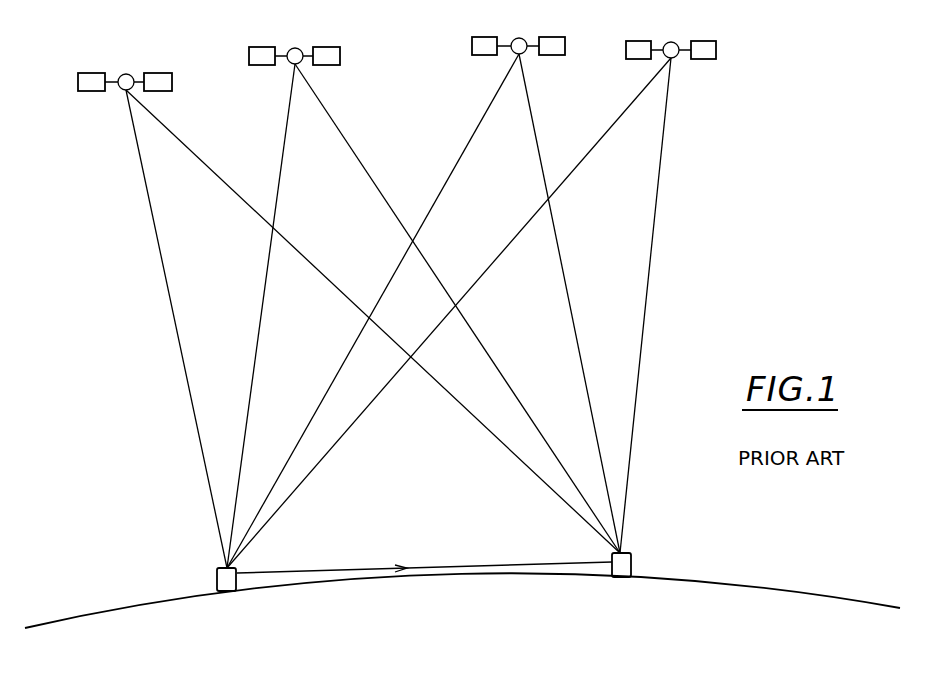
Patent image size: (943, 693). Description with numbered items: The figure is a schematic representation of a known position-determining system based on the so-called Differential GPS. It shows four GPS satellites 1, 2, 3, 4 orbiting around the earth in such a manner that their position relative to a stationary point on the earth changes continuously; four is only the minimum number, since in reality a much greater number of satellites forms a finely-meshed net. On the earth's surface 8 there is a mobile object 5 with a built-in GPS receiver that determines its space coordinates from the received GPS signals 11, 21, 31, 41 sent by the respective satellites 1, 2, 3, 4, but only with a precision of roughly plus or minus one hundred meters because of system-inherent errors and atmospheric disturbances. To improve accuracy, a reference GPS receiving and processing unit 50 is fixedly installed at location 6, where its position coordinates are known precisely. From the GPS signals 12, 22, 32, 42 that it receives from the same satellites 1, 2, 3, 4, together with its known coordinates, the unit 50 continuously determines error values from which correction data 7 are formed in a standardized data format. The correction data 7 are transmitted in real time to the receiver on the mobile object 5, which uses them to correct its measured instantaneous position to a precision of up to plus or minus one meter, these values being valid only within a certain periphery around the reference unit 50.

The GPS satellite 1 is at (118, 93).
The GPS satellite 2 is at (287, 64).
The GPS satellite 3 is at (511, 55).
The GPS satellite 4 is at (682, 60).
The GPS signal 11 is at (228, 188).
The GPS signal 12 is at (167, 275).
The GPS signal 21 is at (339, 122).
The GPS signal 22 is at (280, 184).
The GPS signal 31 is at (537, 143).
The GPS signal 32 is at (443, 188).
The GPS signal 41 is at (663, 152).
The GPS signal 42 is at (568, 178).
The mobile object 5 is at (633, 561).
The reference GPS receiving and processing unit 50 is at (215, 580).
The location 6 is at (227, 597).
The correction data 7 is at (318, 570).
The earth's surface 8 is at (79, 616).